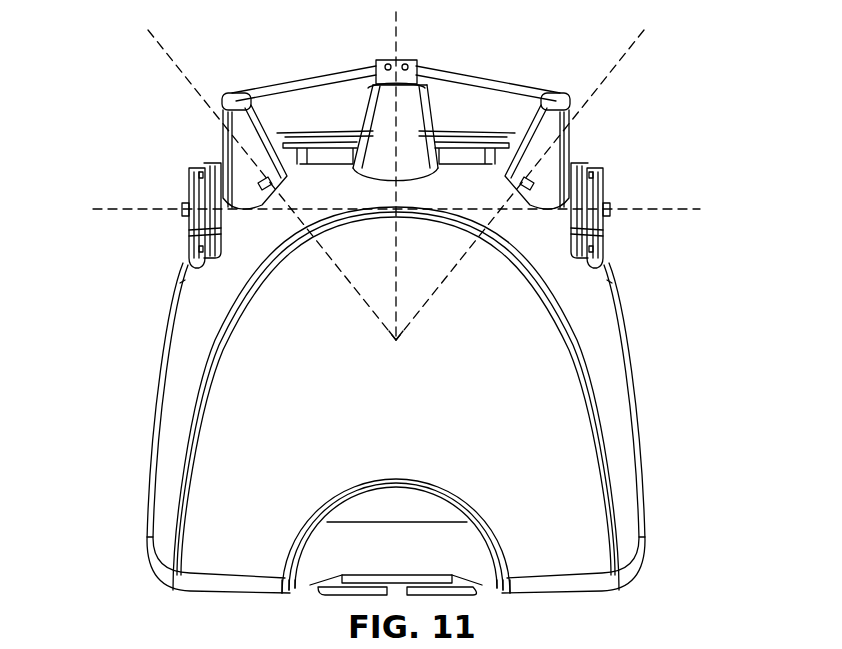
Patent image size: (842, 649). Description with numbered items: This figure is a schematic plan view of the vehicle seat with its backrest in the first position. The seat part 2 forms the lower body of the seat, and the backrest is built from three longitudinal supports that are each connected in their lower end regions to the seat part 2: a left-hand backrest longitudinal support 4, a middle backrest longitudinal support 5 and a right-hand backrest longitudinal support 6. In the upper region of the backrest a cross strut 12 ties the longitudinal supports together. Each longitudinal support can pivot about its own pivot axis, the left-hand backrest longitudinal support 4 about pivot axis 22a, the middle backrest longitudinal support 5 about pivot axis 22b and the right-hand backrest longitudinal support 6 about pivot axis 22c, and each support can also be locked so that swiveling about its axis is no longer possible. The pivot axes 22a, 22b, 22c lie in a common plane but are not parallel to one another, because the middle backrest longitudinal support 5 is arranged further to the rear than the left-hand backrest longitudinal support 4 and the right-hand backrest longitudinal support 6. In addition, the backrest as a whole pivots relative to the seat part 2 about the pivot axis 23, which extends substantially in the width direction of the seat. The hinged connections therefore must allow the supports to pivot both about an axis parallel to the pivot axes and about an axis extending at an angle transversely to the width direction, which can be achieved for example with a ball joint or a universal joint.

The seat part 2 is at (623, 413).
The left-hand backrest longitudinal support 4 is at (240, 128).
The middle backrest longitudinal support 5 is at (413, 100).
The right-hand backrest longitudinal support 6 is at (555, 115).
The cross strut 12 is at (292, 82).
The pivot axis 22a is at (176, 66).
The pivot axis 22b is at (393, 30).
The pivot axis 22c is at (626, 42).
The pivot axis 23 is at (123, 209).